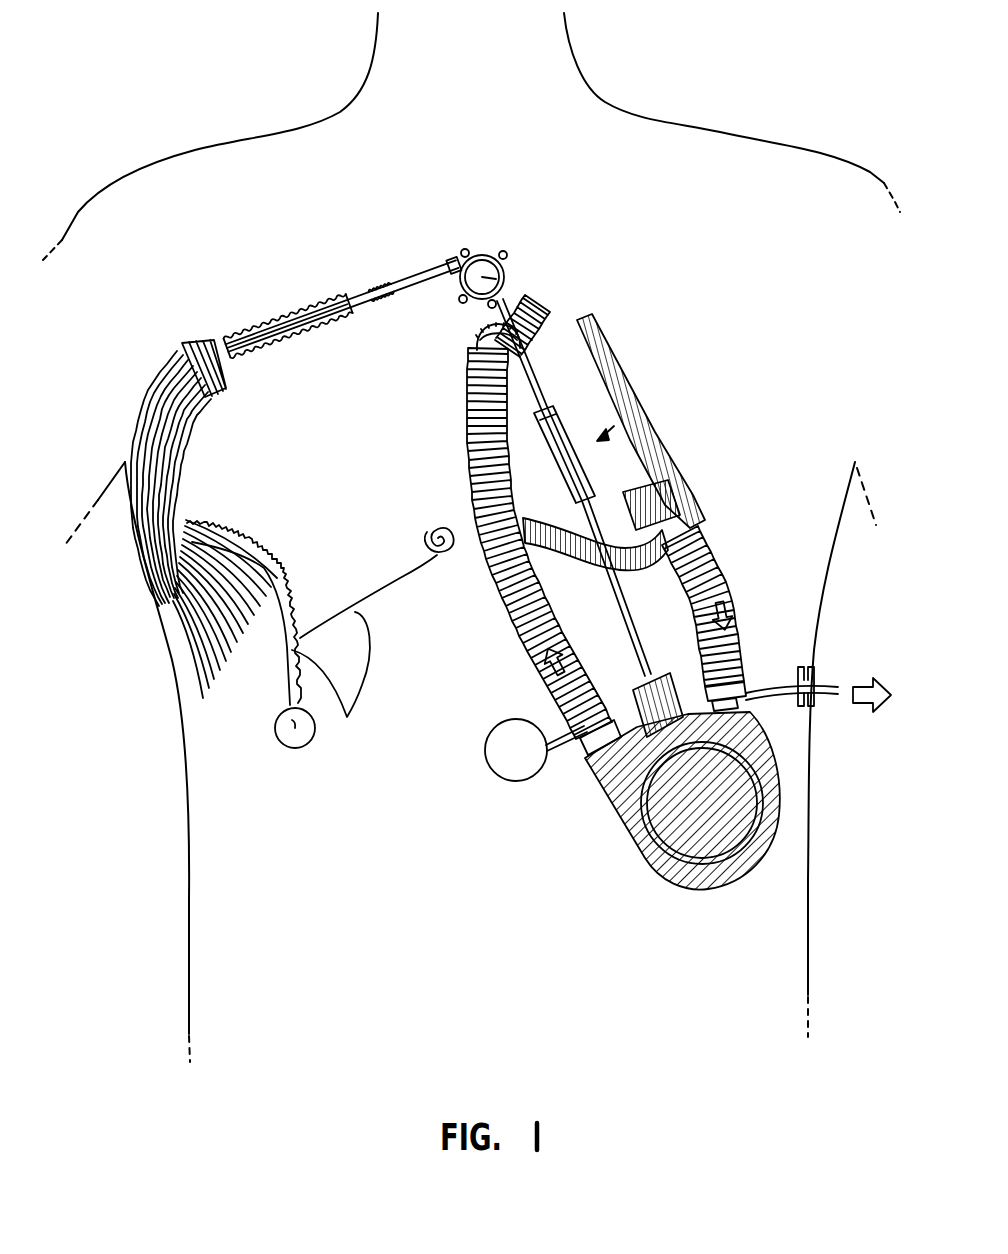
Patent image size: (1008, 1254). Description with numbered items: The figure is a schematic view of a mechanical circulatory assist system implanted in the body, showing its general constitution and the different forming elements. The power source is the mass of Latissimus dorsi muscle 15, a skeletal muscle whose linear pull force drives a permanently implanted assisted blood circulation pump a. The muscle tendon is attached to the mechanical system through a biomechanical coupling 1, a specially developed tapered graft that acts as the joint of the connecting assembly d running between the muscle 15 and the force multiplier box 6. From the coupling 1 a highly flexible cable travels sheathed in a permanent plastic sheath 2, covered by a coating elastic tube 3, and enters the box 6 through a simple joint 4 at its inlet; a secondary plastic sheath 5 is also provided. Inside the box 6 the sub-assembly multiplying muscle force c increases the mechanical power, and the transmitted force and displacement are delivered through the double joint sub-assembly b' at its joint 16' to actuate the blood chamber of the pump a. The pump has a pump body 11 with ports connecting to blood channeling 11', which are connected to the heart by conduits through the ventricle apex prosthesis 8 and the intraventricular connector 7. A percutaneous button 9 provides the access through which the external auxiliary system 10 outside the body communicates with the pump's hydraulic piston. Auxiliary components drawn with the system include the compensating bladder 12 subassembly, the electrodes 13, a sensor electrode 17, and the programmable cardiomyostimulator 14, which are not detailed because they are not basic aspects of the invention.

The biomechanical coupling 1 is at (205, 338).
The permanent plastic sheath 2 is at (273, 318).
The coating elastic tube 3 is at (348, 310).
The simple joint 4 is at (388, 286).
The secondary plastic sheath 5 is at (440, 260).
The force multiplier box 6 is at (494, 263).
The intraventricular connector 7 is at (693, 493).
The ventricle apex prosthesis 8 is at (716, 566).
The percutaneous button 9 is at (818, 667).
The external auxiliary system 10 is at (864, 713).
The pump body 11 is at (682, 804).
The ports connecting to blood channeling 11' is at (692, 754).
The compensating bladder 12 is at (500, 772).
The electrodes 13 is at (312, 630).
The programmable cardiomyostimulator 14 is at (290, 735).
The mass of Latissimus dorsi muscle 15 is at (208, 605).
The joint of double joint sub-assembly 16' is at (507, 525).
The sensor electrode 17 is at (427, 527).
The assisted blood circulation pump a is at (652, 887).
The double joint sub-assembly b' is at (641, 421).
The sub-assembly multiplying muscle force c is at (449, 307).
The connecting assembly d is at (310, 347).